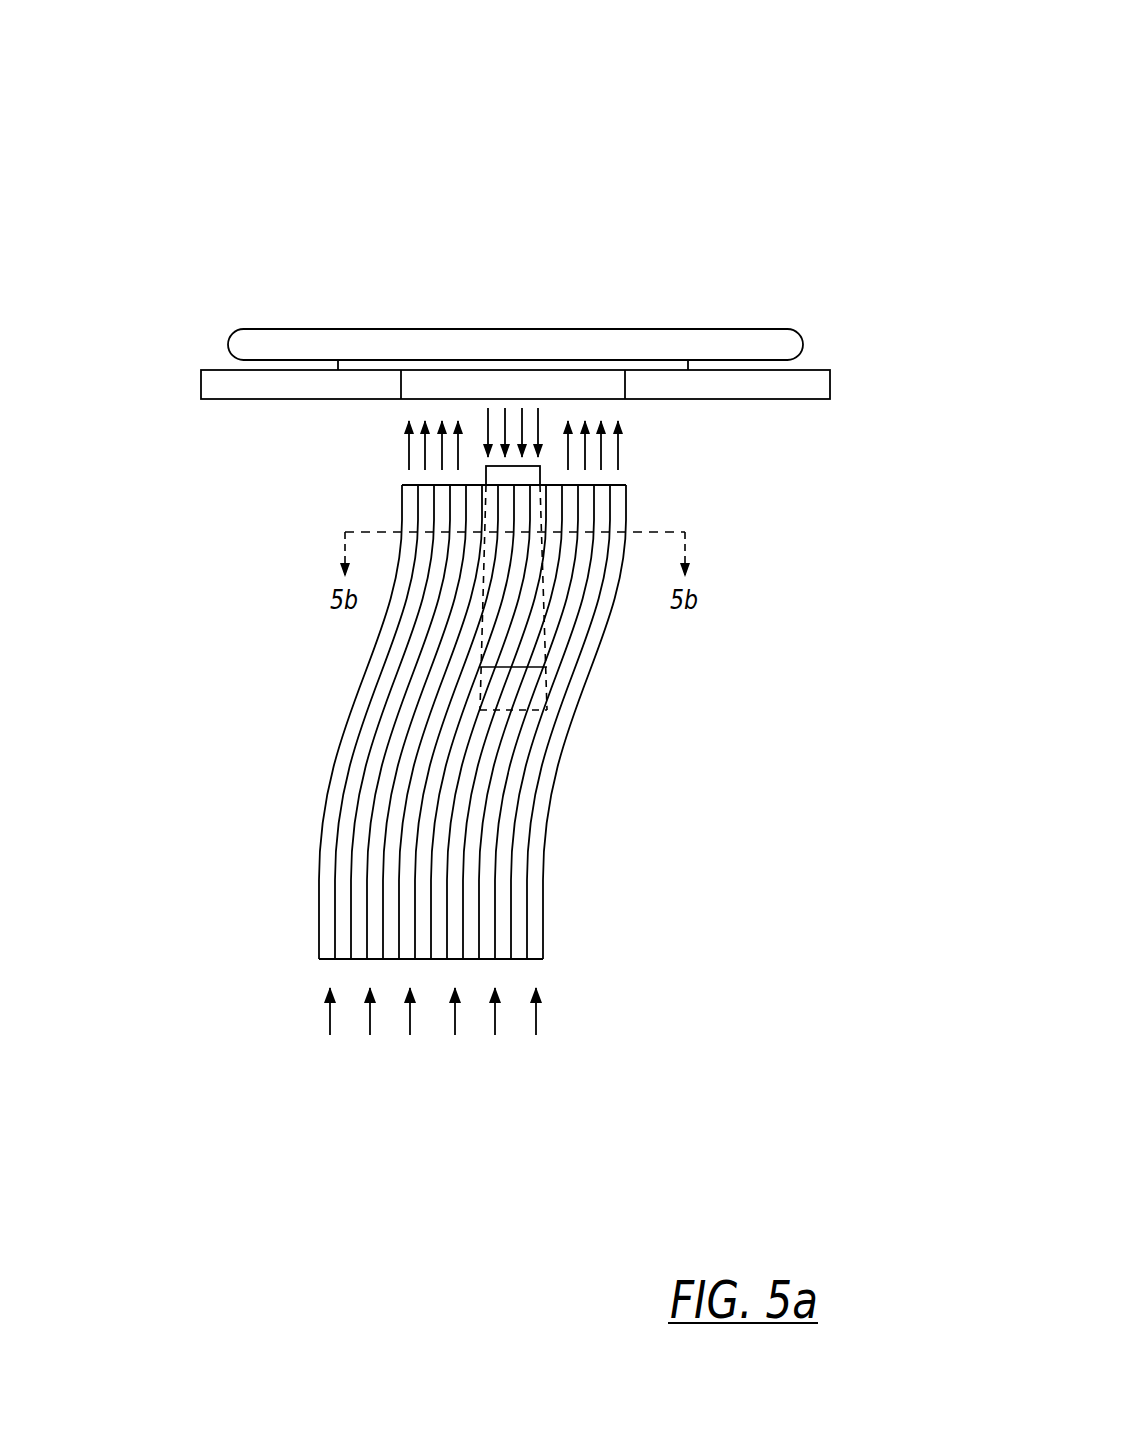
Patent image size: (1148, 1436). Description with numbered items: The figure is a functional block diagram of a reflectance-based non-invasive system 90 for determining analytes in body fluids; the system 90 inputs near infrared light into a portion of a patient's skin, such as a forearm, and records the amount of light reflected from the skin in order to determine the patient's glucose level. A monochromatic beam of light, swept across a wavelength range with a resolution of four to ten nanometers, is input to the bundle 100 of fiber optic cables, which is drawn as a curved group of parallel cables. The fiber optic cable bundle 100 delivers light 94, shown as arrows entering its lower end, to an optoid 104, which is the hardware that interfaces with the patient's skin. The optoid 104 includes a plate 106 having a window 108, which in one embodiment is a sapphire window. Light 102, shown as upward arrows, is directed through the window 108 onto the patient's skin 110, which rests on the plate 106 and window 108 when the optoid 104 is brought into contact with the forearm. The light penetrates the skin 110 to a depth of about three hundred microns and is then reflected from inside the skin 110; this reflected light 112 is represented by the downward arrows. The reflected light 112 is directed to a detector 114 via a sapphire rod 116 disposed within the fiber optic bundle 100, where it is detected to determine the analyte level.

The reflectance-based non-invasive system 90 is at (759, 126).
The light 94 is at (570, 1021).
The bundle of fiber optic cables 100 is at (818, 382).
The light 102 is at (459, 365).
The optoid 104 is at (197, 428).
The plate 106 is at (212, 380).
The window 108 is at (553, 385).
The skin 110 is at (253, 342).
The reflected light 112 is at (548, 408).
The detector 114 is at (567, 700).
The sapphire rod 116 is at (541, 476).